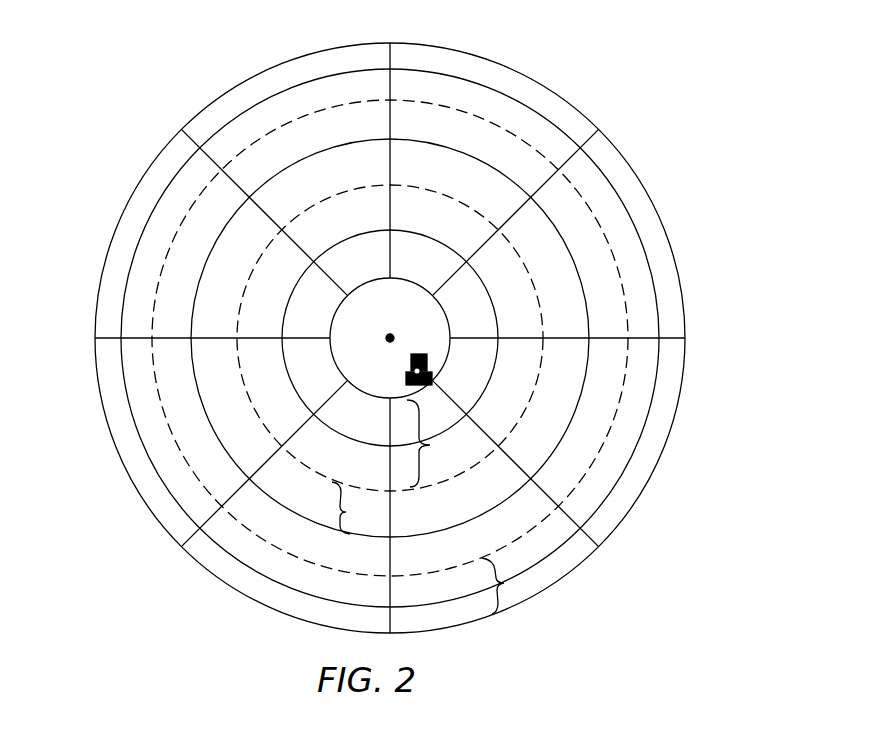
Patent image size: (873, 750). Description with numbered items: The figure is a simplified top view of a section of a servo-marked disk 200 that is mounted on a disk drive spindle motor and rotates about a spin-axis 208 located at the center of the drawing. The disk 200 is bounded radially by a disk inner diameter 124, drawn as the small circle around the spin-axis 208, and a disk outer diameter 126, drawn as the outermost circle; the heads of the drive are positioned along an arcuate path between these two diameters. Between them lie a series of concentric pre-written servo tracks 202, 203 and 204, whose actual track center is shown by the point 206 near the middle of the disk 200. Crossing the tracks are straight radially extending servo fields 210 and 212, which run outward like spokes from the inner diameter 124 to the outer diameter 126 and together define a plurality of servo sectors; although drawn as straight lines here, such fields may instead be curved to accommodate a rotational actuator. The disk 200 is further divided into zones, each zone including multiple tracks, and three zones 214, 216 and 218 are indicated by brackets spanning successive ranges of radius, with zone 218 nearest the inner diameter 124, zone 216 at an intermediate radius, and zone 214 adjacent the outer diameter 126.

The disk 200 is at (392, 322).
The disk outer diameter 126 is at (95, 309).
The servo field 212 is at (687, 334).
The servo field 210 is at (599, 130).
The pre-written servo track 202 is at (150, 467).
The pre-written servo track 203 is at (193, 383).
The pre-written servo track 204 is at (284, 377).
The disk inner diameter 124 is at (335, 322).
The actual track center 206 is at (393, 334).
The spin-axis 208 is at (412, 365).
The zone 218 is at (430, 445).
The zone 216 is at (390, 359).
The zone 214 is at (504, 583).